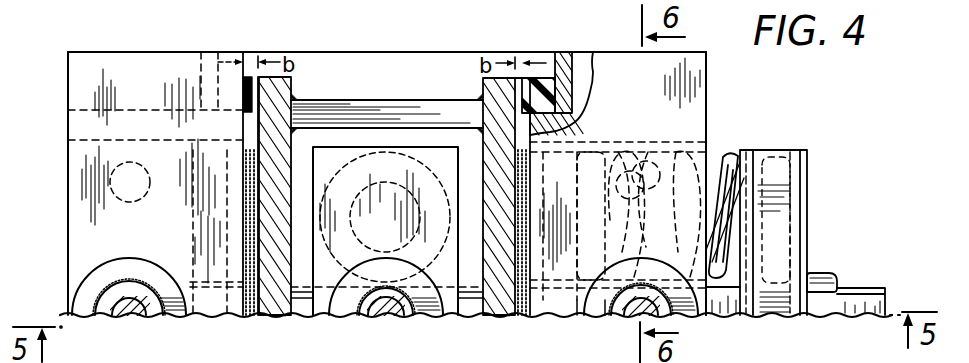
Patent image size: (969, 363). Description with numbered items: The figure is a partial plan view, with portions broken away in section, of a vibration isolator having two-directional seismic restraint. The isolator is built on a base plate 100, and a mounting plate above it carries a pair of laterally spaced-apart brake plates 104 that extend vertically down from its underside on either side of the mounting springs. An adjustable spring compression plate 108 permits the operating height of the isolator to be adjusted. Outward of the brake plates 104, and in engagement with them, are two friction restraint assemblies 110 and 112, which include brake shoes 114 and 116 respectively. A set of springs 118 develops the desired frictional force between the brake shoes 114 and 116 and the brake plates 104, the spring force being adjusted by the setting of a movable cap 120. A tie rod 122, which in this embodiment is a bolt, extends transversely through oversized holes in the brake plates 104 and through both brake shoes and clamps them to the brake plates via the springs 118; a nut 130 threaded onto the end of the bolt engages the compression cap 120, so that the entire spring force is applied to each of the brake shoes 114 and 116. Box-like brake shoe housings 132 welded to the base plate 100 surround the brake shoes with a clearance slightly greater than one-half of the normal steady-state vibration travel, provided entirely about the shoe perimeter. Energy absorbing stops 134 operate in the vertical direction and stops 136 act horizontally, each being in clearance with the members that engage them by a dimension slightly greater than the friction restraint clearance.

The base plate 100 is at (365, 60).
The brake plates 104 is at (277, 300).
The adjustable spring compression plate 108 is at (425, 170).
The friction restraint assembly 110 is at (636, 140).
The friction restraint assembly 112 is at (182, 228).
The brake shoe 114 is at (592, 176).
The brake shoe 116 is at (192, 186).
The springs 118 is at (733, 150).
The movable cap 120 is at (805, 167).
The tie rod 122 is at (873, 290).
The nut 130 is at (826, 273).
The brake shoe housings 132 is at (152, 44).
The energy absorbing stops 134 is at (172, 326).
The stops 136 is at (242, 90).